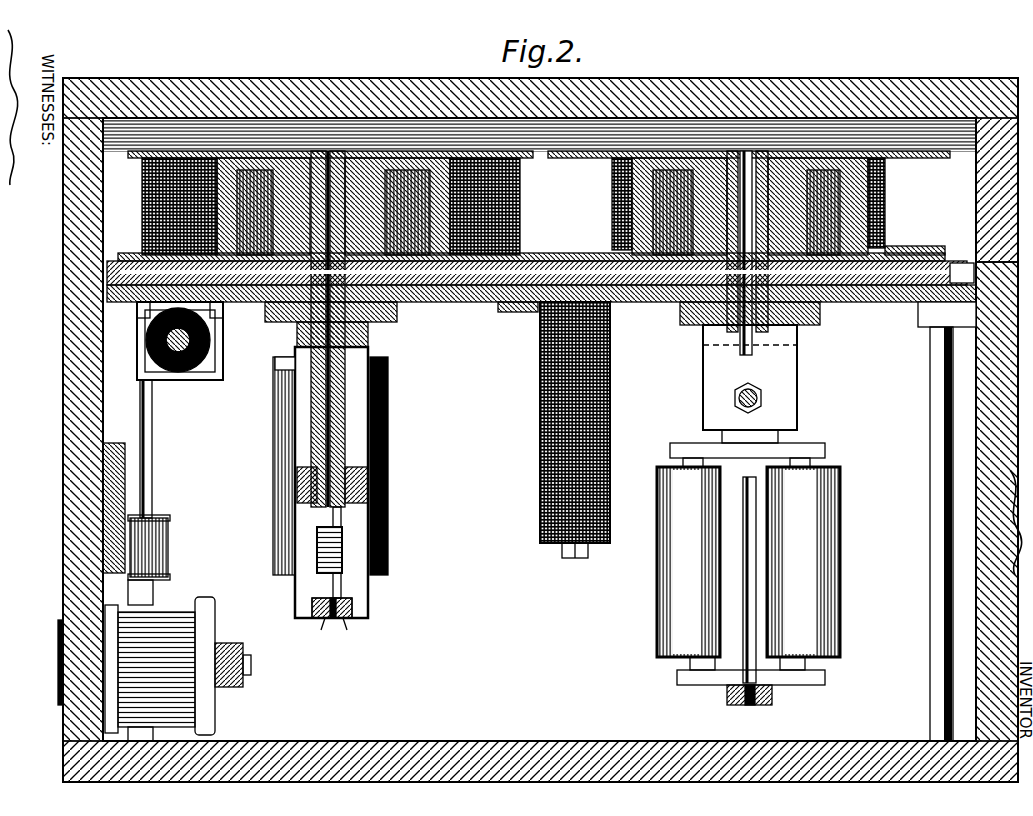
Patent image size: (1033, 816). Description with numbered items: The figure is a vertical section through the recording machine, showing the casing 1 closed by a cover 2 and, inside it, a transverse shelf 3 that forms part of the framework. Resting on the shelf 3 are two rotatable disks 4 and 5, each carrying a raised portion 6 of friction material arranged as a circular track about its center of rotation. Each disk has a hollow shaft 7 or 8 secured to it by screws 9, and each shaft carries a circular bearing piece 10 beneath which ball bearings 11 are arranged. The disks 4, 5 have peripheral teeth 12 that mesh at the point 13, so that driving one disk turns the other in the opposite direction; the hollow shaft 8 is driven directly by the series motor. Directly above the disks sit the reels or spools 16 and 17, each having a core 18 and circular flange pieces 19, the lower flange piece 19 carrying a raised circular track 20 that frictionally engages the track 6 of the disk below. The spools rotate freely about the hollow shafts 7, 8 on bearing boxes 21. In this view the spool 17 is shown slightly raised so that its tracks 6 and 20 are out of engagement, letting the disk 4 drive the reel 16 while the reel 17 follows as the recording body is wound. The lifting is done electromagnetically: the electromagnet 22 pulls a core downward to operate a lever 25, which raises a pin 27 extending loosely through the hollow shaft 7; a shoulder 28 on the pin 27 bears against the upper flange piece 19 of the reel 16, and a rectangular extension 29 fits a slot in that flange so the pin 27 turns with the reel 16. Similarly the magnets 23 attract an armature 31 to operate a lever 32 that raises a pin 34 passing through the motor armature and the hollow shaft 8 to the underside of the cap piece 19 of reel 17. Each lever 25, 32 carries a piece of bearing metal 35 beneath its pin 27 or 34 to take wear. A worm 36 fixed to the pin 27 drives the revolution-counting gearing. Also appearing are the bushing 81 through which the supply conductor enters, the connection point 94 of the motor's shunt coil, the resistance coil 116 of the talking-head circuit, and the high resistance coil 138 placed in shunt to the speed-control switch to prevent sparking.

The casing 1 is at (66, 498).
The cover 2 is at (66, 221).
The transverse shelf 3 is at (477, 306).
The rotatable disk 4 is at (412, 321).
The rotatable disk 5 is at (644, 306).
The raised portion 6 is at (126, 254).
The hollow shaft 7 is at (316, 369).
The hollow shaft 8 is at (762, 341).
The screws 9 is at (262, 320).
The circular bearing piece 10 is at (295, 321).
The ball bearings 11 is at (385, 326).
The teeth 12 is at (115, 270).
The point of engagement 13 is at (522, 312).
The spool 16 is at (228, 152).
The spool 17 is at (652, 150).
The core 18 is at (290, 165).
The circular flange piece 19 is at (412, 150).
The raised circular track 20 is at (141, 223).
The bearing box 21 is at (768, 150).
The electromagnet 22 is at (282, 517).
The electromagnets 23 is at (660, 583).
The lever 25 is at (347, 622).
The pin 27 is at (330, 518).
The shoulder 28 is at (333, 162).
The rectangular extension 29 is at (339, 150).
The armature 31 is at (825, 676).
The lever 32 is at (772, 697).
The pin 34 is at (747, 348).
The bearing metal piece 35 is at (327, 622).
The worm 36 is at (343, 567).
The bushing 81 is at (173, 612).
The connection point 94 is at (145, 335).
The resistance coil 116 is at (162, 530).
The high resistance coil 138 is at (540, 388).